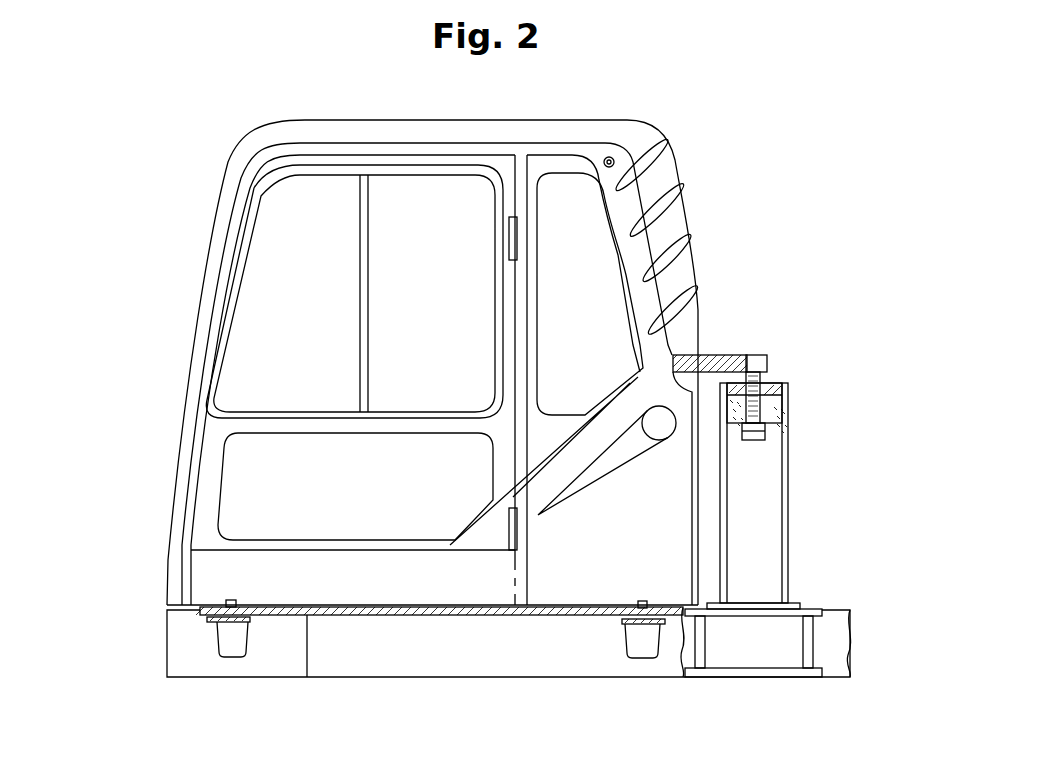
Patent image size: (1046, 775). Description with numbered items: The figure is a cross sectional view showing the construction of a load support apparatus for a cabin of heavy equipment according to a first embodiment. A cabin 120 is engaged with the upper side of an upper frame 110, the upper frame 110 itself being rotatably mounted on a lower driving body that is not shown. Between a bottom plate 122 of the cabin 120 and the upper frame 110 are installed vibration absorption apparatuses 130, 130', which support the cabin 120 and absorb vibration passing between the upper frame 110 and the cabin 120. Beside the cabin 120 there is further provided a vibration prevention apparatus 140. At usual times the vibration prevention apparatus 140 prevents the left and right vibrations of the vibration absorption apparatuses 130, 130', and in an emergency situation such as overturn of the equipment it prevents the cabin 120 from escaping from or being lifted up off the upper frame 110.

The upper frame 110 is at (278, 650).
The cabin 120 is at (197, 342).
The bottom plate 122 is at (205, 612).
The vibration absorption apparatus 130 is at (180, 660).
The vibration absorption apparatus 130' is at (658, 674).
The vibration prevention apparatus 140 is at (790, 450).